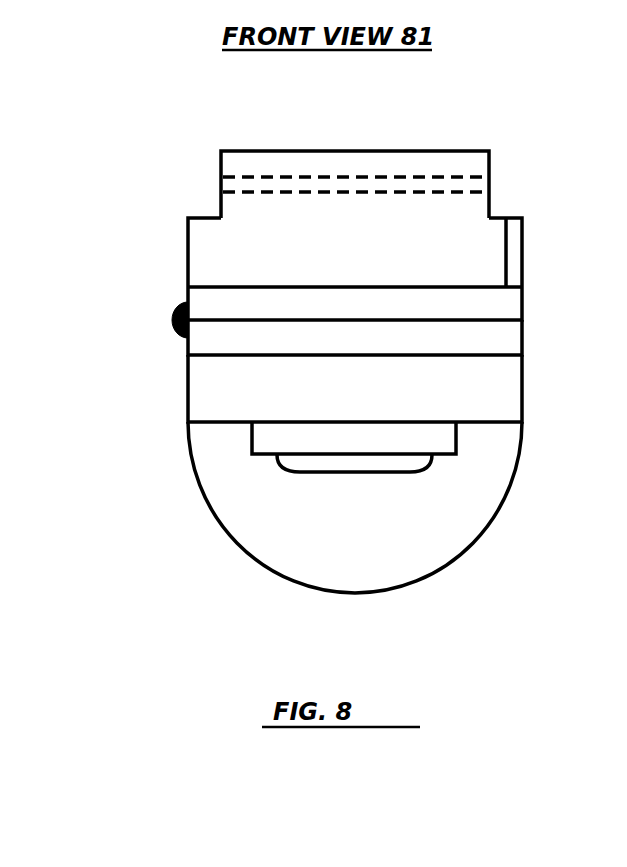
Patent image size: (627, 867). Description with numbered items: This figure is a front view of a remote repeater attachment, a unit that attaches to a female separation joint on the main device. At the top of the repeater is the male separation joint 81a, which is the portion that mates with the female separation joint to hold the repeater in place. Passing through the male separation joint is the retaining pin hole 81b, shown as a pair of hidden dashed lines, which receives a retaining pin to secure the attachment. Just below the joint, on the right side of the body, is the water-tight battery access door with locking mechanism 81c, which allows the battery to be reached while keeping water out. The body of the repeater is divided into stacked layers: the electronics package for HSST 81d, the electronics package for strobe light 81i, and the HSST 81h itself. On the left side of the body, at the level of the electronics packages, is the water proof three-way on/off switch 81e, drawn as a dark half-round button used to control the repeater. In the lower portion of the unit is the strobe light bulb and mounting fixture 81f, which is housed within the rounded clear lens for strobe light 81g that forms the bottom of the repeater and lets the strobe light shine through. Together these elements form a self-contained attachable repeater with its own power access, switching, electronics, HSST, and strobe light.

The male separation joint 81a is at (432, 148).
The retaining pin hole 81b is at (494, 182).
The water-tight battery access door with locking mechanism 81c is at (533, 251).
The electronics package for HSST 81d is at (355, 305).
The electronics package for strobe light 81i is at (355, 337).
The HSST 81h is at (355, 388).
The water proof 3-way on/off switch 81e is at (172, 300).
The strobe light bulb and mounting fixture 81f is at (377, 440).
The clear lens for strobe light 81g is at (443, 572).